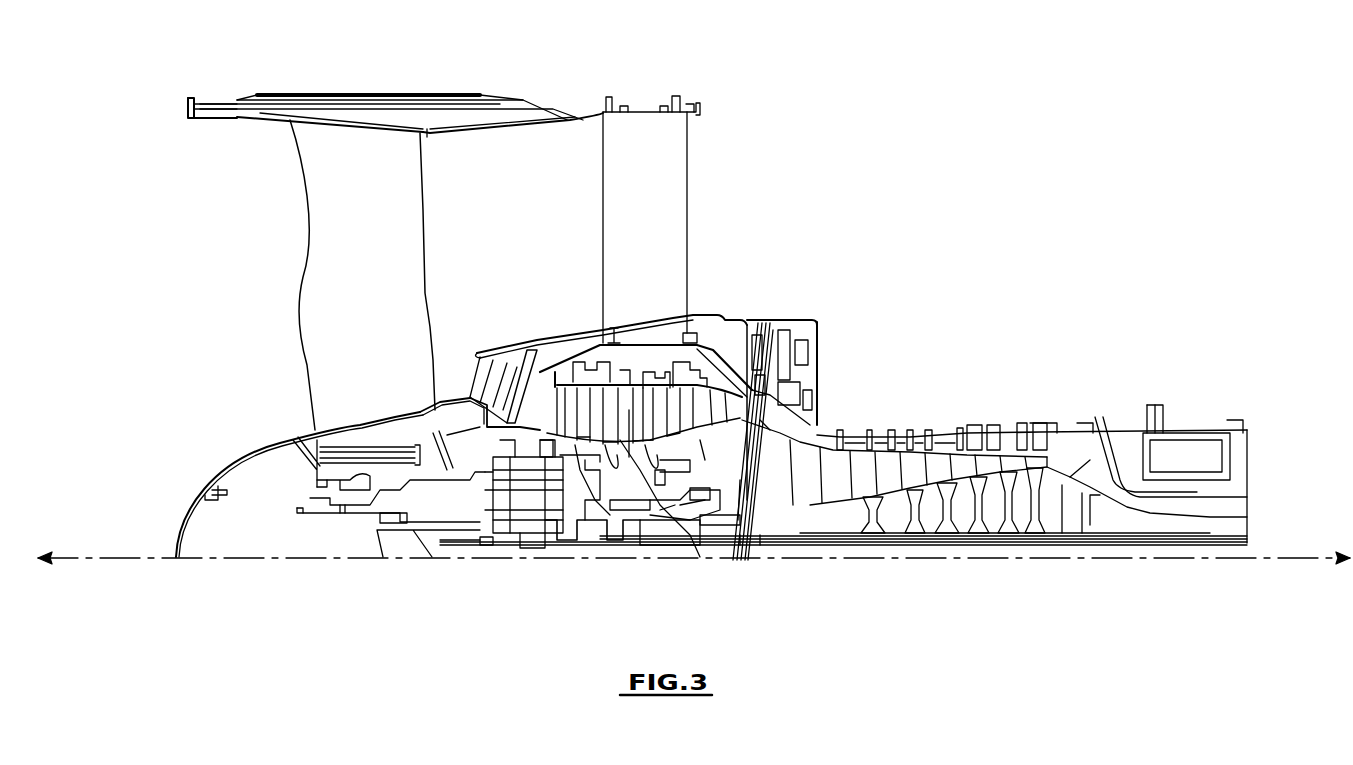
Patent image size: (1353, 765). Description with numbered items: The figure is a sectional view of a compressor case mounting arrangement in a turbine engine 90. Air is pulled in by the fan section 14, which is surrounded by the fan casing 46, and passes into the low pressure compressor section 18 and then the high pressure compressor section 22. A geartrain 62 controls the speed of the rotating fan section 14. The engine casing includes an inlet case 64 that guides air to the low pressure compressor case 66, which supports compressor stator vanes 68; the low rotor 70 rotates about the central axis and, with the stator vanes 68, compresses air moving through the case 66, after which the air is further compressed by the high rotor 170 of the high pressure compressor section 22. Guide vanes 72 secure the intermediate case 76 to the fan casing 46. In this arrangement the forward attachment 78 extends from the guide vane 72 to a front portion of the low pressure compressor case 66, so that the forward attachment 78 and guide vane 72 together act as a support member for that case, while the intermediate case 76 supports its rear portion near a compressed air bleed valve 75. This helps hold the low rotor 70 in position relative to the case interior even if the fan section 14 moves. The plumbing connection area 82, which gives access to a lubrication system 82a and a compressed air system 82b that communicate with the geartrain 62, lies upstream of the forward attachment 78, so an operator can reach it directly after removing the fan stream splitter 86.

The fan section 14 is at (316, 272).
The low pressure compressor section 18 is at (618, 292).
The high pressure compressor section 22 is at (968, 413).
The fan casing 46 is at (574, 112).
The geartrain 62 is at (468, 558).
The inlet case 64 is at (528, 365).
The low pressure compressor case 66 is at (645, 370).
The compressor stator vanes 68 is at (613, 527).
The low rotor 70 is at (701, 465).
The guide vanes 72 is at (687, 222).
The compressed air bleed valve 75 is at (783, 382).
The intermediate case 76 is at (780, 520).
The forward attachment 78 is at (600, 340).
The plumbing connection area 82 is at (542, 356).
The lubrication system 82a is at (503, 413).
The compressed air system 82b is at (490, 525).
The fan stream splitter 86 is at (575, 333).
The turbine engine 90 is at (920, 106).
The high rotor 170 is at (928, 536).